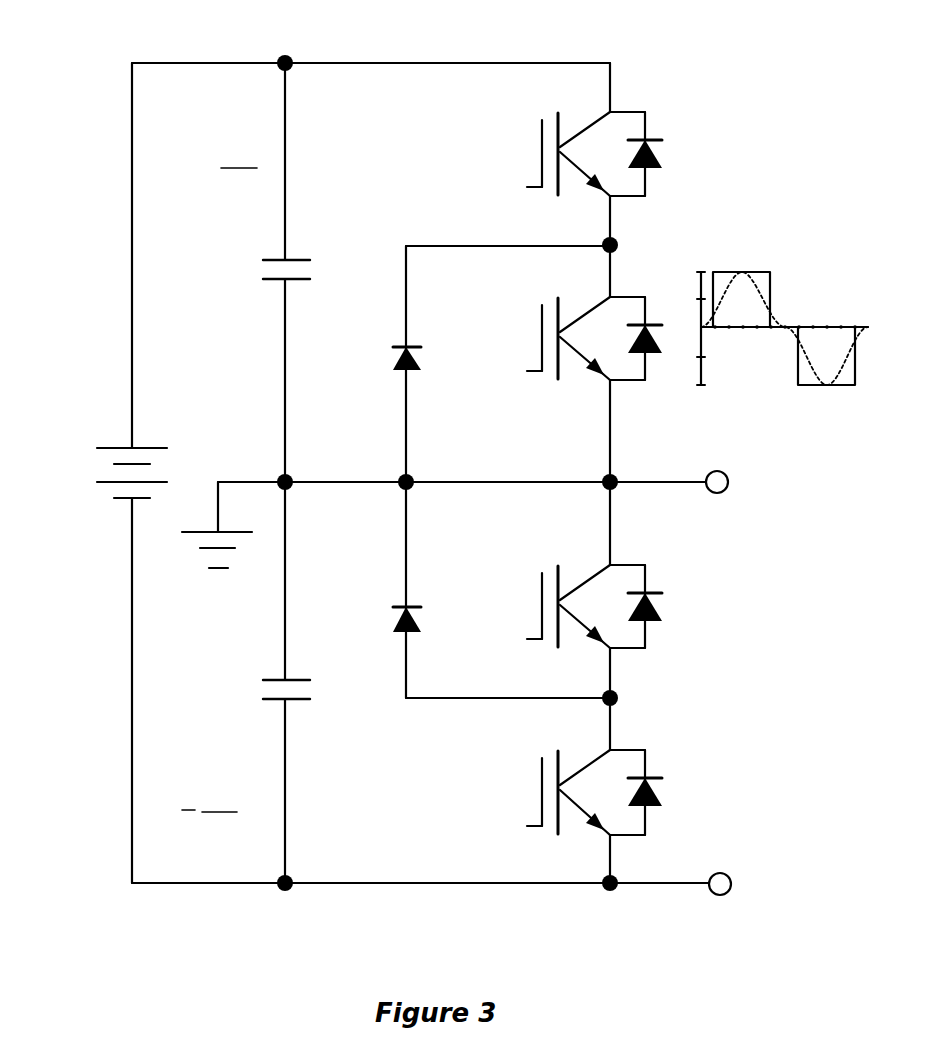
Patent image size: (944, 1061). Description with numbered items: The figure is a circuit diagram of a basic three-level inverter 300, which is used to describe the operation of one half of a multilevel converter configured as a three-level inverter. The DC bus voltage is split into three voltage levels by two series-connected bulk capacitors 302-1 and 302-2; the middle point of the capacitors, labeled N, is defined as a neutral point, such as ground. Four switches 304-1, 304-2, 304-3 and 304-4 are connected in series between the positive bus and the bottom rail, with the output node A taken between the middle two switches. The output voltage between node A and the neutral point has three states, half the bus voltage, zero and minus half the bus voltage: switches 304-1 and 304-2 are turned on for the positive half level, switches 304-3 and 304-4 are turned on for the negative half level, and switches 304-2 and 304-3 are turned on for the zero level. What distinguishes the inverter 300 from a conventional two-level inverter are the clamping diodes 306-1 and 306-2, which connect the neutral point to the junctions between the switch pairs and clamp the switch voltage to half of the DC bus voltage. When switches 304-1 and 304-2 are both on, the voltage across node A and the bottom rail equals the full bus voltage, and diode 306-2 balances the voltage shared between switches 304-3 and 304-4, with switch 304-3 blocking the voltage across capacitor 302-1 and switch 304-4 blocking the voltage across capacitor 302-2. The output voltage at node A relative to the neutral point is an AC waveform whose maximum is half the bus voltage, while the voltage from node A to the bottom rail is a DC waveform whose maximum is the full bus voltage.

The three-level inverter 300 is at (430, 29).
The bulk capacitor 302-1 is at (247, 285).
The bulk capacitor 302-2 is at (247, 709).
The switch 304-1 is at (563, 154).
The switch 304-2 is at (563, 338).
The switch 304-3 is at (567, 601).
The switch 304-4 is at (563, 792).
The clamping diode 306-1 is at (372, 352).
The clamping diode 306-2 is at (372, 608).